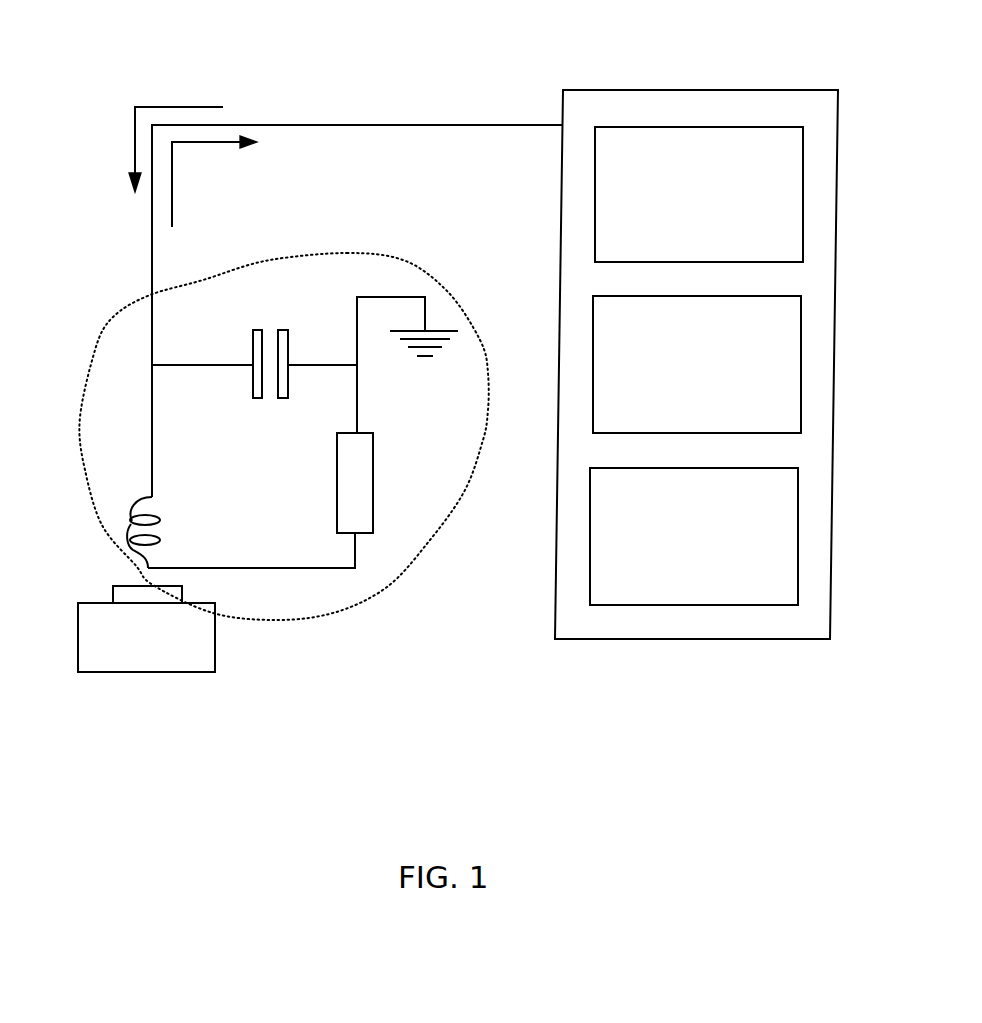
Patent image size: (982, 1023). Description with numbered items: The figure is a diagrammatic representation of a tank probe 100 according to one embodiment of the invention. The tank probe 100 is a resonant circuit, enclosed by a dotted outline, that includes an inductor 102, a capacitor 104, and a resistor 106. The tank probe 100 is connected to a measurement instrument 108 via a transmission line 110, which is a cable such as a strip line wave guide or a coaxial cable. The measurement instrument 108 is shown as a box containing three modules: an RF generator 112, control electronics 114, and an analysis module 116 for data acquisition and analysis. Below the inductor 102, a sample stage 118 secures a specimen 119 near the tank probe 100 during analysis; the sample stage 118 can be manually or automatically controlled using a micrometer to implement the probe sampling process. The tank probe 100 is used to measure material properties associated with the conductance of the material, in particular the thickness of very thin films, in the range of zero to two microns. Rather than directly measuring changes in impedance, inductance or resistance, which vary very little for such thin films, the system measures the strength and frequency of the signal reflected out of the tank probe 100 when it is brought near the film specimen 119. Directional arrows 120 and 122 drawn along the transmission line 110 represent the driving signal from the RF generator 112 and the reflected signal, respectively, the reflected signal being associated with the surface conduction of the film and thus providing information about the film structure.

The tank probe 100 is at (387, 587).
The inductor 102 is at (130, 523).
The capacitor 104 is at (253, 347).
The resistor 106 is at (373, 475).
The measurement instrument 108 is at (663, 90).
The transmission line 110 is at (360, 120).
The RF generator 112 is at (803, 177).
The control electronics 114 is at (801, 348).
The analysis module 116 is at (798, 517).
The sample stage 118 is at (143, 672).
The specimen 119 is at (105, 585).
The directional arrow 120 is at (170, 105).
The directional arrow 122 is at (203, 142).